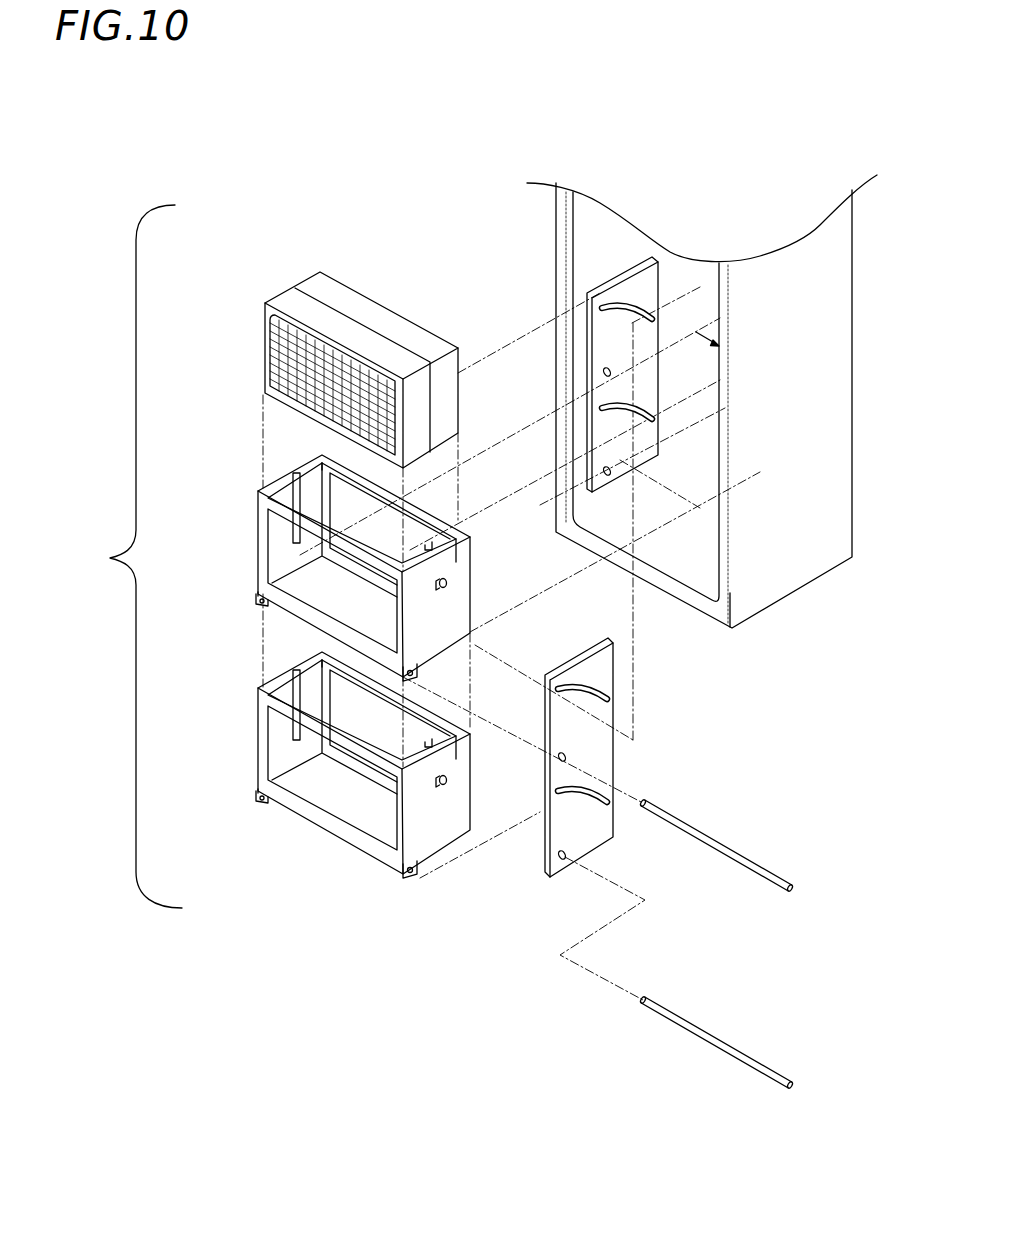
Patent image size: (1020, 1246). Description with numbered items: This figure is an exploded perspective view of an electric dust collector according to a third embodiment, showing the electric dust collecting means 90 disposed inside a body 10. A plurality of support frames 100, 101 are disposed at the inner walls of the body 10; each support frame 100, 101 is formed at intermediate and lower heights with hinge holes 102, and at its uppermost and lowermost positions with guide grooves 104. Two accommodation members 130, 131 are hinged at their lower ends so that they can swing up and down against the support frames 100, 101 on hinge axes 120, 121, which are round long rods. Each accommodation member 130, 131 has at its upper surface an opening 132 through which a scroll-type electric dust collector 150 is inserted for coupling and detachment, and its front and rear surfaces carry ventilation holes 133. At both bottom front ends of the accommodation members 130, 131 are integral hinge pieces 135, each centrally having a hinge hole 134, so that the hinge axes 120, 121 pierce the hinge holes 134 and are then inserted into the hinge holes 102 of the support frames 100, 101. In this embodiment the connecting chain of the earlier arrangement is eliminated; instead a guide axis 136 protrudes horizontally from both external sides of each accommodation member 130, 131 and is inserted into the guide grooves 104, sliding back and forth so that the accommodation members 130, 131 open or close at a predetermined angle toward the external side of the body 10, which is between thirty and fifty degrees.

The body 10 is at (813, 263).
The electric dust collecting means 90 is at (82, 568).
The support frame 100 is at (592, 266).
The support frame 101 is at (585, 839).
The hinge hole 102 is at (601, 470).
The guide groove 104 is at (652, 318).
The hinge axis 120 is at (648, 798).
The hinge axis 121 is at (648, 996).
The accommodation member 130 is at (252, 478).
The accommodation member 131 is at (248, 698).
The opening 132 is at (312, 495).
The ventilation hole 133 is at (295, 522).
The hinge hole 134 is at (419, 677).
The hinge piece 135 is at (258, 598).
The guide axis 136 is at (448, 583).
The electric dust collector 150 is at (265, 316).